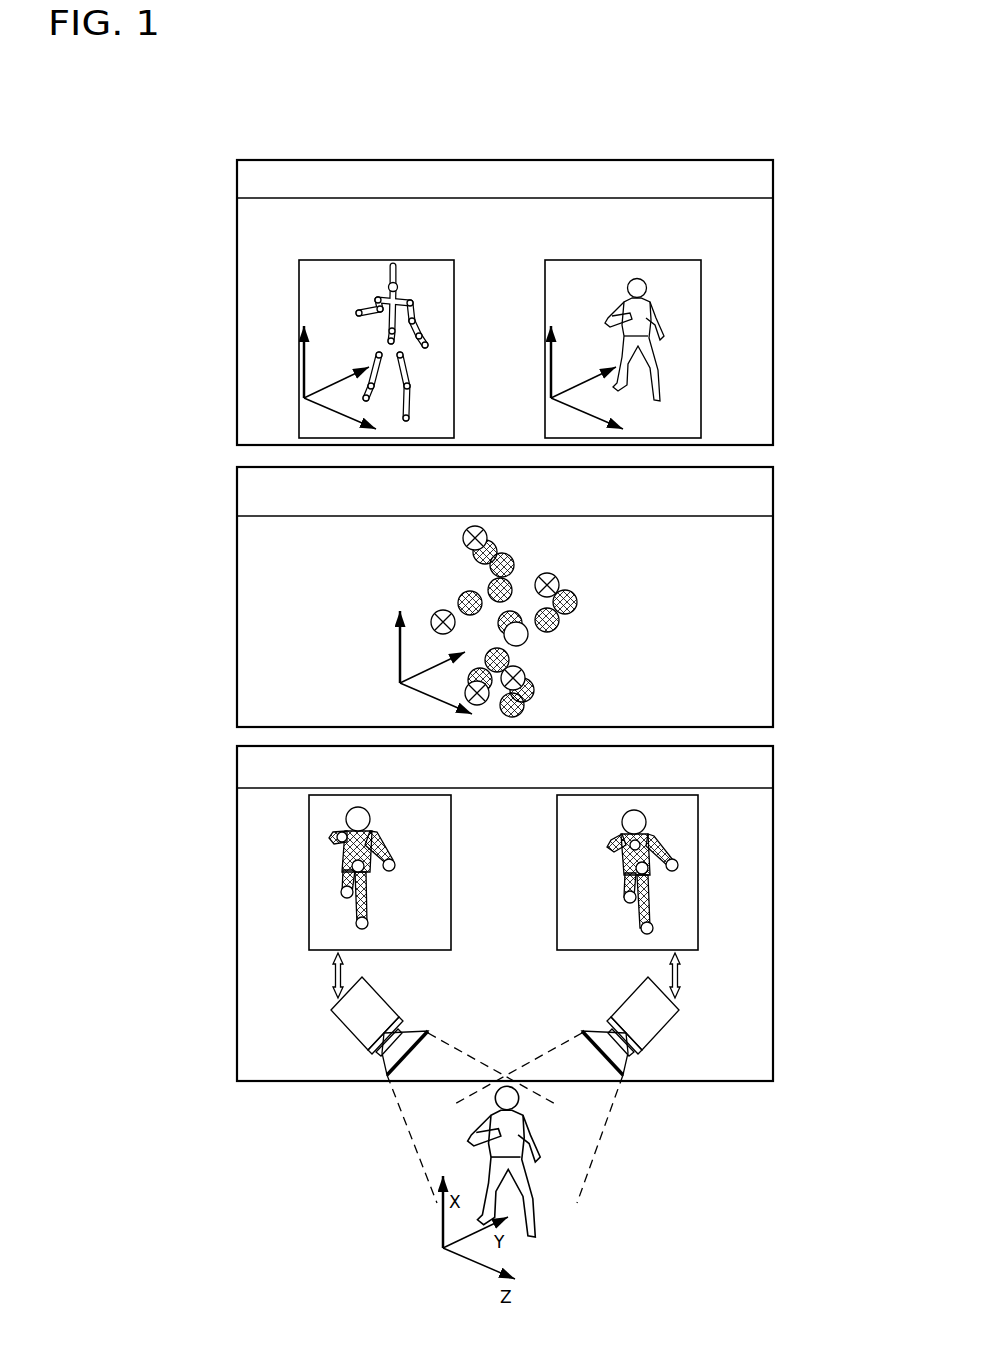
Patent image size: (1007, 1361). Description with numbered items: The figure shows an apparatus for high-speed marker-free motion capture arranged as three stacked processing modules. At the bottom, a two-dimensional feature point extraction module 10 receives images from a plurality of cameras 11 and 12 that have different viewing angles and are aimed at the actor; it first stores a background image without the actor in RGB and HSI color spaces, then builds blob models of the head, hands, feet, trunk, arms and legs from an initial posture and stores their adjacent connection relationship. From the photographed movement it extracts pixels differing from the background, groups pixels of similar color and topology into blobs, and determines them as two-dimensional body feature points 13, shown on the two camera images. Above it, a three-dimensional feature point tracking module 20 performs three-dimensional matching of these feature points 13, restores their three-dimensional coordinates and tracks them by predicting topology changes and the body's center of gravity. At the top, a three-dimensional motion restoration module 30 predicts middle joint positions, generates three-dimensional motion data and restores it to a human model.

The 2-dimensional feature point extraction module 10 is at (514, 974).
The camera 11 is at (340, 1035).
The camera 12 is at (670, 1035).
The 2-dimensional body feature points 13 is at (358, 923).
The 3-dimensional feature point tracking module 20 is at (773, 600).
The 3-dimensional motion restoration module 30 is at (773, 331).